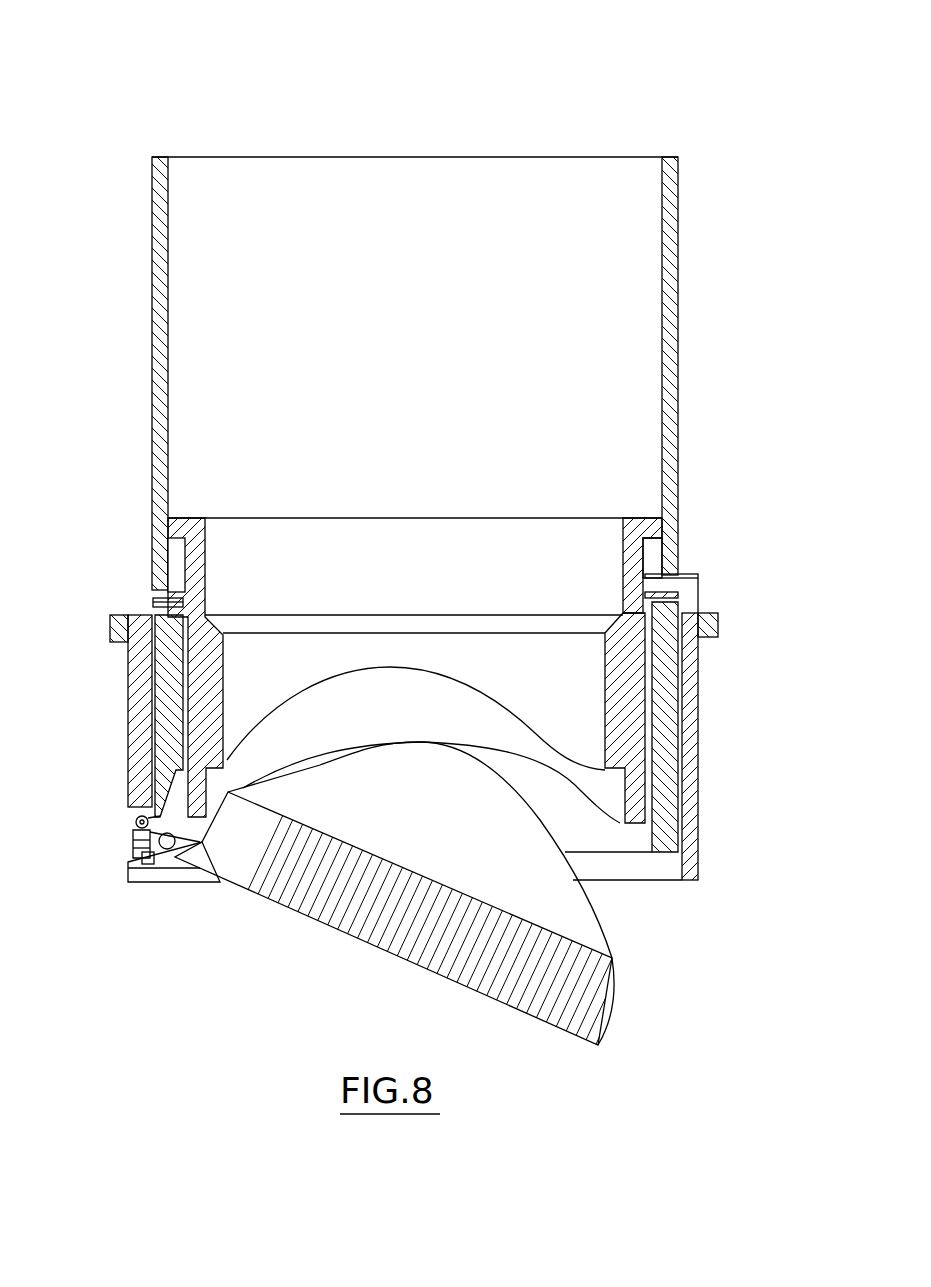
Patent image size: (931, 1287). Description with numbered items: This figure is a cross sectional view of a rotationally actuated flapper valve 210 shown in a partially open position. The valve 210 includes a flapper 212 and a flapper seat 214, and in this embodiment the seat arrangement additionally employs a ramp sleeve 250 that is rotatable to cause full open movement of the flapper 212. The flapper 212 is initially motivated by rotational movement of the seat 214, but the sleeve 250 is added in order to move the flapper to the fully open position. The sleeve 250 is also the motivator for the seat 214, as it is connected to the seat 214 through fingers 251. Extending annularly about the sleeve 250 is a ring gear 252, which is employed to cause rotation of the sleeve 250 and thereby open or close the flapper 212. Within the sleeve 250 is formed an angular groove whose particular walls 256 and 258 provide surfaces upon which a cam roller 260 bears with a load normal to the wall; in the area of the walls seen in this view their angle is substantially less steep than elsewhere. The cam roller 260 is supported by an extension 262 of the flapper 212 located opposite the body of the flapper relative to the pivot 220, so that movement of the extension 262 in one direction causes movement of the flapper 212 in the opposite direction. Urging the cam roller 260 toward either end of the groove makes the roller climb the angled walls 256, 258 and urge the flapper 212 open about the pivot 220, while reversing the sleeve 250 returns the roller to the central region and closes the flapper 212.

The valve 210 is at (737, 102).
The flapper 212 is at (247, 840).
The flapper seat 214 is at (202, 673).
The pivot 220 is at (155, 852).
The ramp sleeve 250 is at (700, 777).
The fingers 251 is at (652, 580).
The ring gear 252 is at (718, 618).
The wall of the groove 256 is at (135, 862).
The wall of the groove 258 is at (136, 810).
The cam roller 260 is at (165, 840).
The extension 262 is at (188, 850).